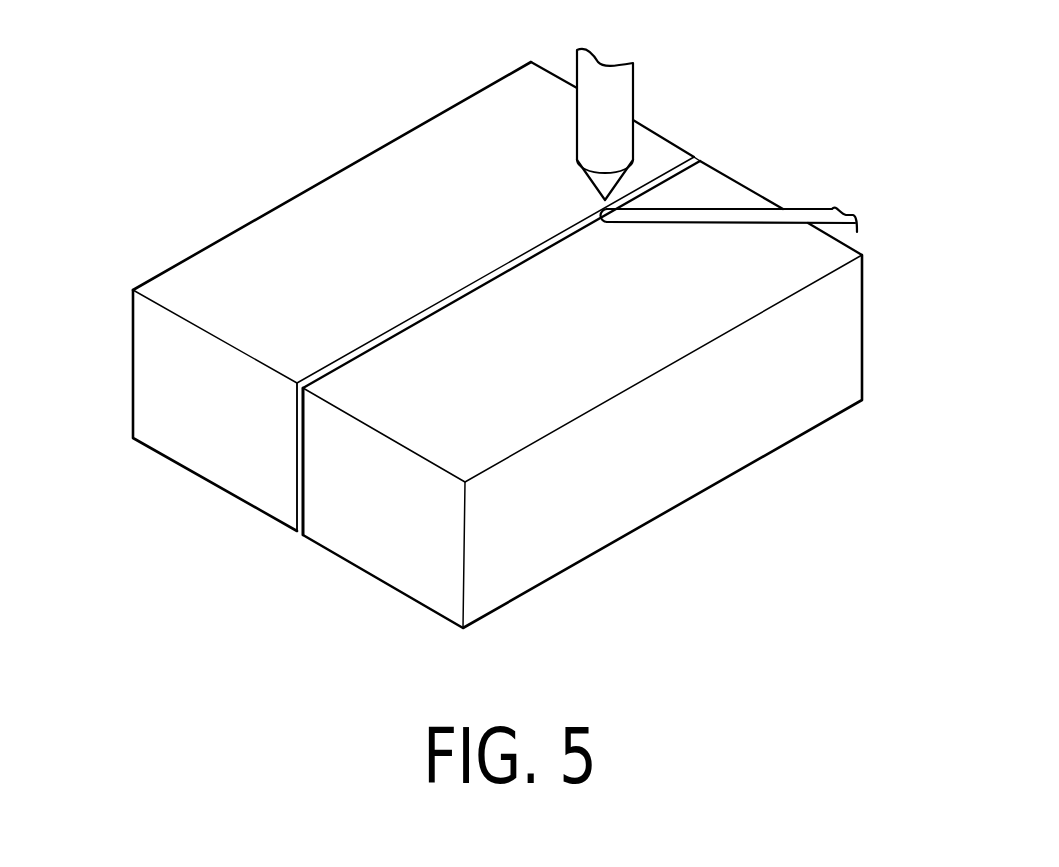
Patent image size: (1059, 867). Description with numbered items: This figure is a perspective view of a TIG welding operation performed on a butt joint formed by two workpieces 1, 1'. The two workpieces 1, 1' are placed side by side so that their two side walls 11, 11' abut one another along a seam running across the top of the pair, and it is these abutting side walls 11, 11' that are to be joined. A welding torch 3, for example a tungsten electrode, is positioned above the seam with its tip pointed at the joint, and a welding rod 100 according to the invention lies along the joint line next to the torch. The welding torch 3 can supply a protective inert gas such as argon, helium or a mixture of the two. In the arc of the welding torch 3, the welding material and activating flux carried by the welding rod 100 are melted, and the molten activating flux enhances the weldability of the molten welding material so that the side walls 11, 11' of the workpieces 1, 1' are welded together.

The workpiece 1 is at (582, 415).
The workpiece 1' is at (359, 296).
The side wall 11 is at (297, 514).
The side wall 11' is at (243, 497).
The welding torch 3 is at (625, 92).
The welding rod 100 is at (822, 208).